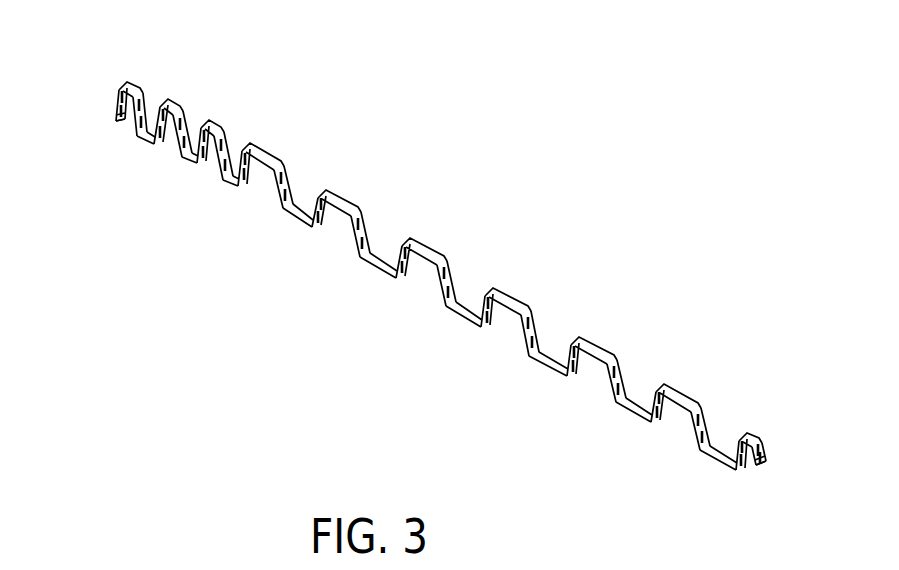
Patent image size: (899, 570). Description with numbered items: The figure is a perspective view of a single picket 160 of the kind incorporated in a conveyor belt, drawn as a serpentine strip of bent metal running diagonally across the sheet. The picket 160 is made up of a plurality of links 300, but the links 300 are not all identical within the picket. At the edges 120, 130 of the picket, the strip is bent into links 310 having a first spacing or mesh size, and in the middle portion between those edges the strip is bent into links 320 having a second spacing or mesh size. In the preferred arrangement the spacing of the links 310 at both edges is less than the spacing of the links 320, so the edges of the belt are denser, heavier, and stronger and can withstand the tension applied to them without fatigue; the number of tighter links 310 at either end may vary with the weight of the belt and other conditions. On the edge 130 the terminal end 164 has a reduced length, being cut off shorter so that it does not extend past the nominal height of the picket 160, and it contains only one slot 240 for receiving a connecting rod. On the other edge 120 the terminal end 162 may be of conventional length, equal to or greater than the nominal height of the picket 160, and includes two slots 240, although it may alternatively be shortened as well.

The edge 120 is at (112, 92).
The edge 130 is at (777, 447).
The picket 160 is at (536, 226).
The terminal end 162 is at (117, 121).
The terminal end 164 is at (749, 470).
The slot 240 is at (115, 97).
The links 300 is at (622, 330).
The links 310 is at (167, 102).
The links 320 is at (340, 202).